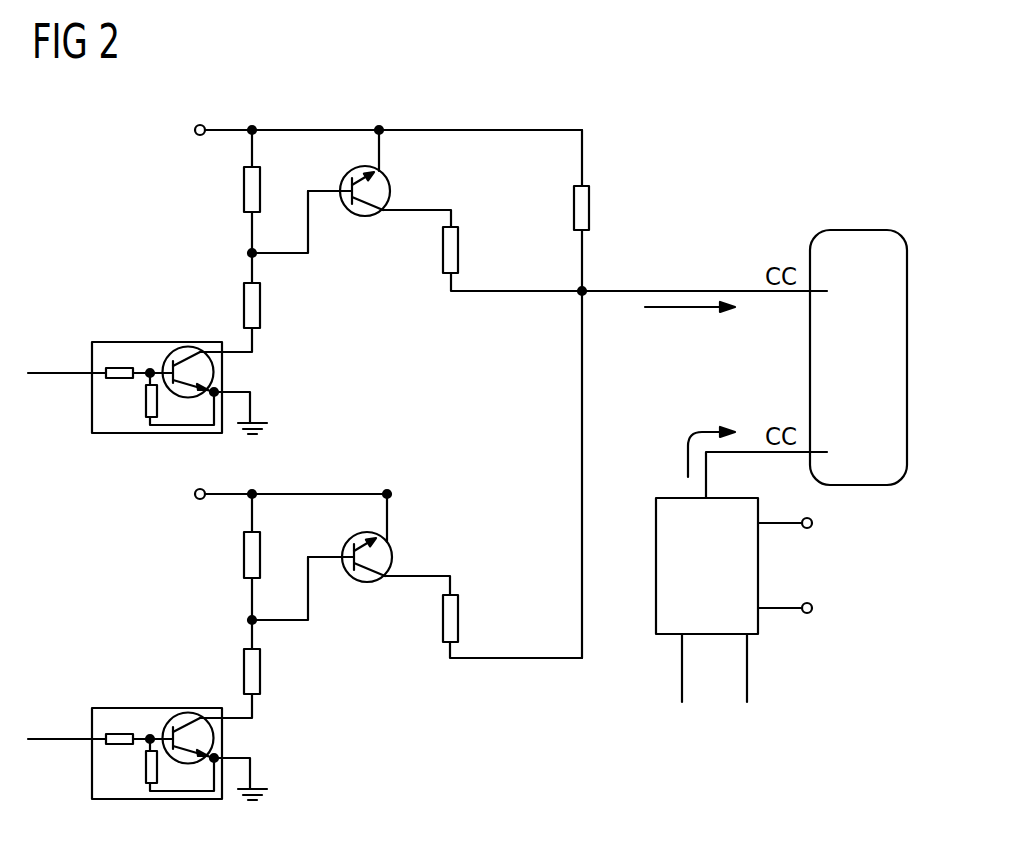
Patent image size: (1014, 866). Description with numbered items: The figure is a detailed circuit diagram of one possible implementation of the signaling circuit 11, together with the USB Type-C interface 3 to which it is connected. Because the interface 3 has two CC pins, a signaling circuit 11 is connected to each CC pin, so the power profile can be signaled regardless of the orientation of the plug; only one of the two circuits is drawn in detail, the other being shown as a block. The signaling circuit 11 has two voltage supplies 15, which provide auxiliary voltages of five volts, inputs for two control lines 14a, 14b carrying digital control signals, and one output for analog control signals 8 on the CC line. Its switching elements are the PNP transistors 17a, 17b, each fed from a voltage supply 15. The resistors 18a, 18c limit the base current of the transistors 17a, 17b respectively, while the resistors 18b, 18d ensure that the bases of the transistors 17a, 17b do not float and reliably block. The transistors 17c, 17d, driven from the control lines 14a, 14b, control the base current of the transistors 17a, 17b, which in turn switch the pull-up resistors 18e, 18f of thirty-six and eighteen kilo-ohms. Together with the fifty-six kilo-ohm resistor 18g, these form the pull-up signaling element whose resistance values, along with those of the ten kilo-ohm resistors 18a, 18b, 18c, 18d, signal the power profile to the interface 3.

The USB Type-C interface 3 is at (853, 229).
The analog control signals 8 is at (684, 313).
The signaling circuit 11 is at (563, 758).
The control line 14a is at (50, 371).
The control line 14b is at (50, 736).
The voltage supply 15 is at (195, 131).
The PNP transistor 17a is at (392, 176).
The PNP transistor 17b is at (395, 545).
The transistor 17c is at (143, 341).
The transistor 17d is at (143, 707).
The resistor 18a is at (262, 307).
The resistor 18b is at (243, 188).
The resistor 18c is at (262, 674).
The resistor 18d is at (243, 554).
The pull-up resistor 18e is at (460, 258).
The pull-up resistor 18f is at (460, 622).
The resistor 18g is at (590, 207).